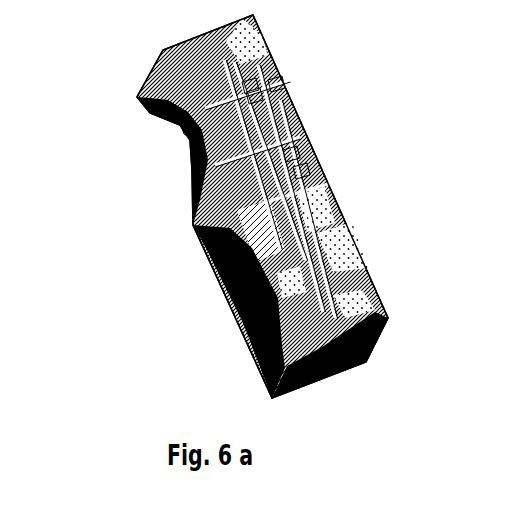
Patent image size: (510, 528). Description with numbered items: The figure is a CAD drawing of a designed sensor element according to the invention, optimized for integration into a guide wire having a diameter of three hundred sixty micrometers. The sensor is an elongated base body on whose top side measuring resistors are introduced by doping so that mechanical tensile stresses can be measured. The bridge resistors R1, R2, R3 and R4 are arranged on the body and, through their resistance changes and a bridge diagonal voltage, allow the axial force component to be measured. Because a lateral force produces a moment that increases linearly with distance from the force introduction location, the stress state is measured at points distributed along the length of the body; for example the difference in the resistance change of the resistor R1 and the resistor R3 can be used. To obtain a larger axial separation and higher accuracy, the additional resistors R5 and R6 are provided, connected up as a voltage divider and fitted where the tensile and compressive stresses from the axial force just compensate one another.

The resistor R1 is at (252, 96).
The resistor R2 is at (275, 83).
The resistor R3 is at (250, 88).
The resistor R4 is at (185, 128).
The resistor R5 is at (290, 153).
The resistor R6 is at (300, 170).